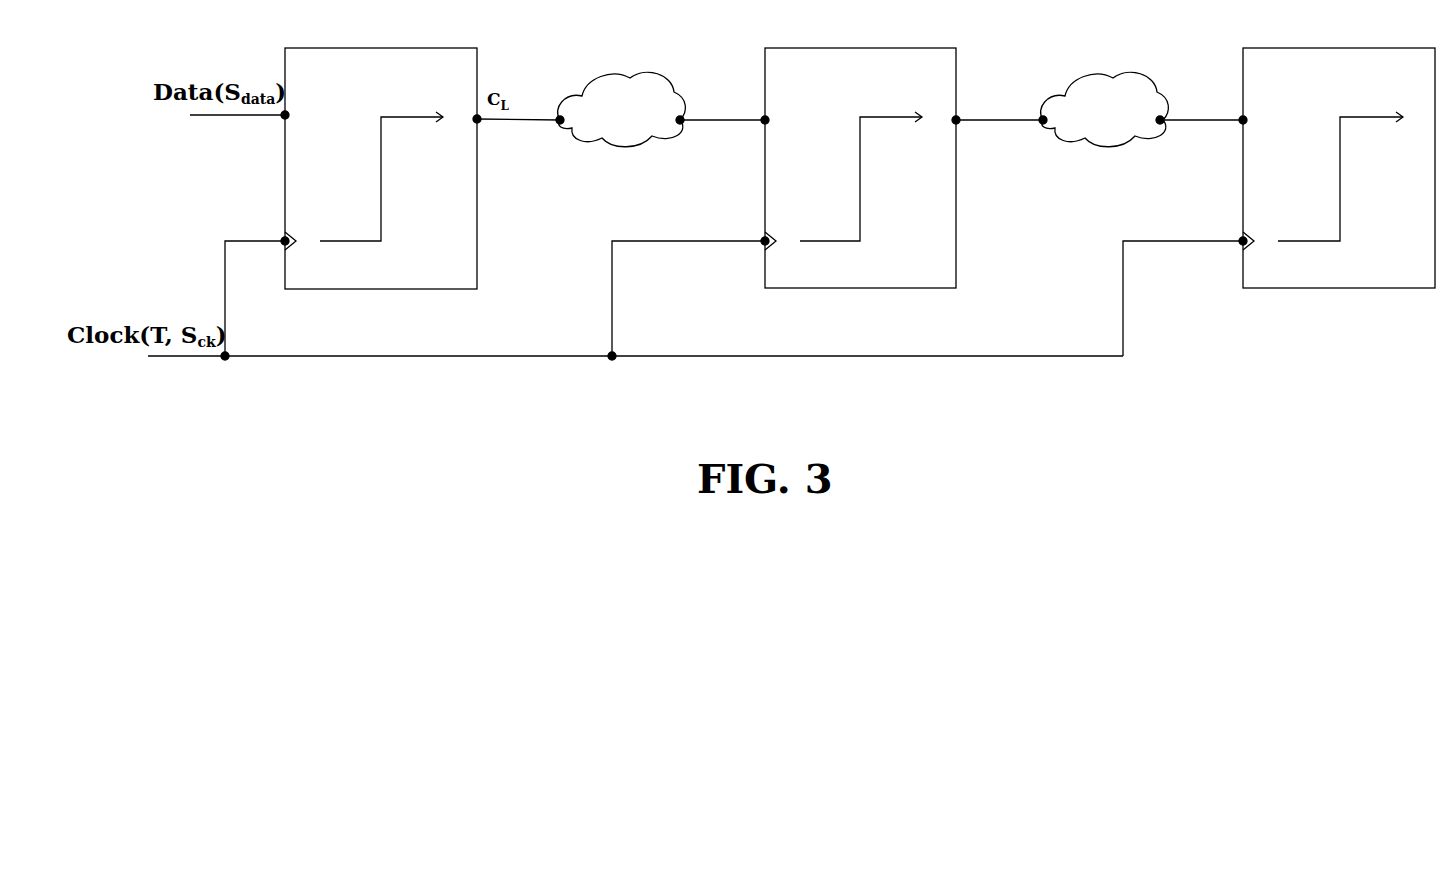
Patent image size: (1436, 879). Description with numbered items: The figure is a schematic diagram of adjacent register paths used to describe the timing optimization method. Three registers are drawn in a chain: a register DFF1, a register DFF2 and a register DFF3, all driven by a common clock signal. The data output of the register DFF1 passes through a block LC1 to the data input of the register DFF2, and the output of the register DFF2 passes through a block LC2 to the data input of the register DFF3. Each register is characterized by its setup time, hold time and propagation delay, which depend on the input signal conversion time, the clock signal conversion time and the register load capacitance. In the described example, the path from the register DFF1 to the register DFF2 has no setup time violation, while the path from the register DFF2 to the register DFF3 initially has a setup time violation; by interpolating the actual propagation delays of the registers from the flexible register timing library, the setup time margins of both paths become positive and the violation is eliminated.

The register DFF1 is at (383, 186).
The register DFF2 is at (862, 186).
The register DFF3 is at (1339, 186).
The first logic circuit LC1 is at (620, 109).
The second logic circuit LC2 is at (1103, 109).